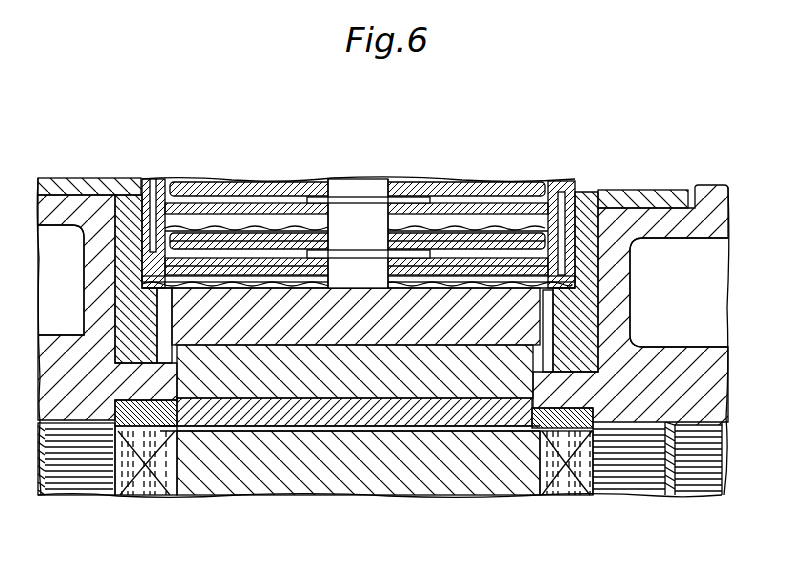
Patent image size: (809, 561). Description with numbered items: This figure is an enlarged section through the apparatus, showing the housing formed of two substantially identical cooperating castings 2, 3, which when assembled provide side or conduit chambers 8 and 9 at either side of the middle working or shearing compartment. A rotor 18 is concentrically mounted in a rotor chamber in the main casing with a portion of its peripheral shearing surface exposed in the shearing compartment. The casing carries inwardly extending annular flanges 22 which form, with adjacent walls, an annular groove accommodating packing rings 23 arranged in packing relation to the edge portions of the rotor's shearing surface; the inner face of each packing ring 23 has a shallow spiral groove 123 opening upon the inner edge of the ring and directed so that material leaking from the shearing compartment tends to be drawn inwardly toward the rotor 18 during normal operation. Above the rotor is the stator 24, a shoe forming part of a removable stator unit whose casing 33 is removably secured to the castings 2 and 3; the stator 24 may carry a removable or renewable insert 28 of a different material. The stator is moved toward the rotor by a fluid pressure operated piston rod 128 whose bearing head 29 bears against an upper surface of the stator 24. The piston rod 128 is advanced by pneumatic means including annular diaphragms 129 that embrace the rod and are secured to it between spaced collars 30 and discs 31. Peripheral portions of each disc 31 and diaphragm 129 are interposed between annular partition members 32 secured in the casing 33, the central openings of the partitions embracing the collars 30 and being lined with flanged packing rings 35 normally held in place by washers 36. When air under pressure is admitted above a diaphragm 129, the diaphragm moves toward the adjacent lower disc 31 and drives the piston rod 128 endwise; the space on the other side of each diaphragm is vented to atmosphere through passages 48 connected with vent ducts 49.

The casting 2 is at (82, 288).
The casting 3 is at (733, 229).
The side chamber 8 is at (61, 280).
The side chamber 9 is at (679, 292).
The rotor 18 is at (472, 493).
The annular flange 22 is at (133, 380).
The packing ring 23 is at (150, 497).
The stator 24 is at (367, 380).
The insert 28 is at (293, 410).
The bearing head 29 is at (455, 260).
The collar 30 is at (334, 180).
The disc 31 is at (498, 260).
The annular partition member 32 is at (517, 250).
The casing 33 is at (587, 310).
The flanged packing ring 35 is at (398, 225).
The washer 36 is at (417, 245).
The passage 48 is at (175, 181).
The vent duct 49 is at (157, 179).
The spiral groove 123 is at (158, 428).
The piston rod 128 is at (364, 240).
The annular diaphragm 129 is at (265, 188).